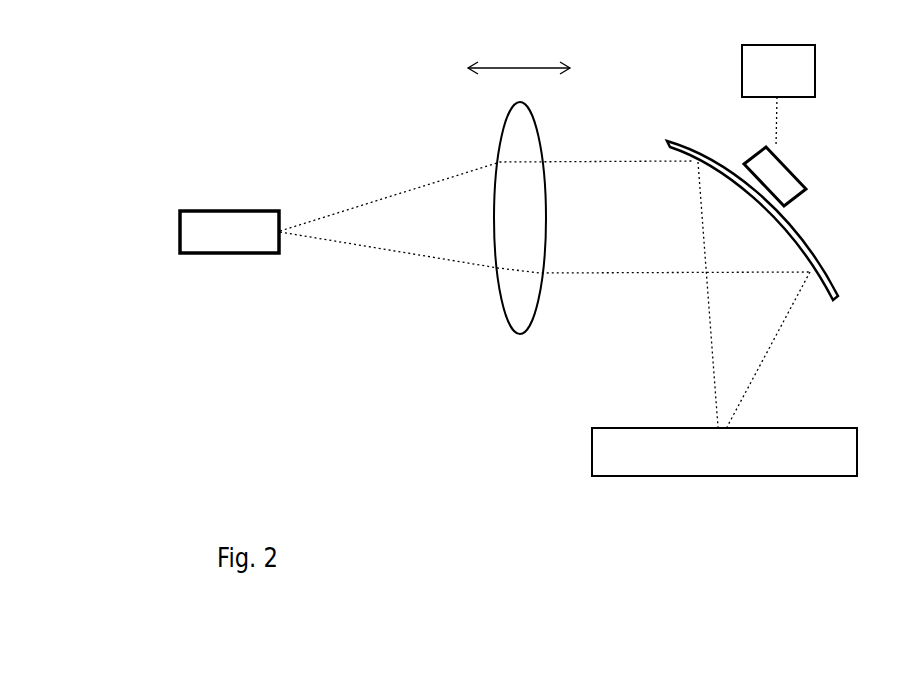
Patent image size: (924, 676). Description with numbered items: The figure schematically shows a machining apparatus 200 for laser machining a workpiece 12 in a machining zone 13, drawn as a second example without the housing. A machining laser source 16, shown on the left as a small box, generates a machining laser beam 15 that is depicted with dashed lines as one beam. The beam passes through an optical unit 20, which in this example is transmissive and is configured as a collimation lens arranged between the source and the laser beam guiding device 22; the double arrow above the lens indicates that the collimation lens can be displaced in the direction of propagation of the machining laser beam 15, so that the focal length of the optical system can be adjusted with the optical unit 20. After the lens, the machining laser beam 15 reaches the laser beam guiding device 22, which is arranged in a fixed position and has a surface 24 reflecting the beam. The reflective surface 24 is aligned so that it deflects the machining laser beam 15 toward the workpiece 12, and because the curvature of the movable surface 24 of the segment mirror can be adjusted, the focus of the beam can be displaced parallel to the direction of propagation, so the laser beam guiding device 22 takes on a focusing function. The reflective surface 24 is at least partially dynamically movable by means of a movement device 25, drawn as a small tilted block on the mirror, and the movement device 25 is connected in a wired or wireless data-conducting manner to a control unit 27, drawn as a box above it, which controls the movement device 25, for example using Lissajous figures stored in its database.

The machining apparatus 200 is at (156, 127).
The machining laser source 16 is at (233, 253).
The machining laser beam 15 is at (400, 222).
The optical unit 20 is at (537, 137).
The control unit 27 is at (742, 87).
The movement device 25 is at (793, 177).
The laser beam guiding device 22 is at (847, 183).
The reflective surface 24 is at (763, 215).
The machining zone 13 is at (740, 420).
The workpiece 12 is at (752, 478).